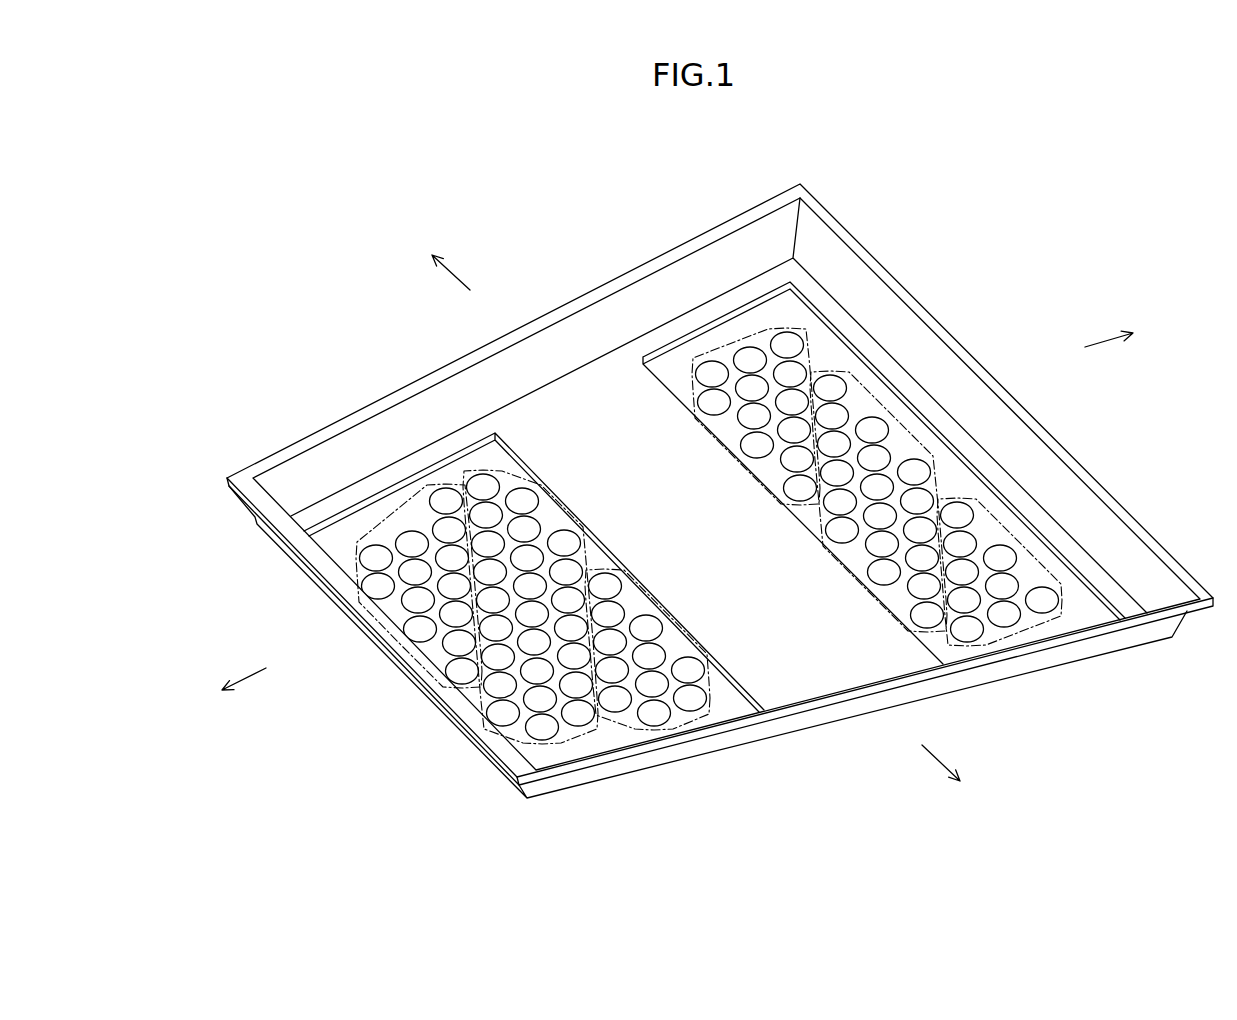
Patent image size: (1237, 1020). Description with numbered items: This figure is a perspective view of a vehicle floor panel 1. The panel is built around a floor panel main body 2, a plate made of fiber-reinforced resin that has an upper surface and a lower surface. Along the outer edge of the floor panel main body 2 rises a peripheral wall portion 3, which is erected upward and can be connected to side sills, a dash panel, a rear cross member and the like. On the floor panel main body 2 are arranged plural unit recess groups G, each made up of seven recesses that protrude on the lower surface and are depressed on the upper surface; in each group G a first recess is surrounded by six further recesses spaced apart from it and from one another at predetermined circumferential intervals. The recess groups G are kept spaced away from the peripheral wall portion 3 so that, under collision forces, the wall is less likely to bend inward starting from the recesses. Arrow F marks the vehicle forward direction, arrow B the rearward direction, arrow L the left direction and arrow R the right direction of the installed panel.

The vehicle floor panel 1 is at (899, 203).
The floor panel main body 2 is at (477, 460).
The peripheral wall portion 3 is at (736, 736).
The unit recess group G is at (447, 500).
The arrow R is at (440, 256).
The arrow F is at (229, 693).
The arrow B is at (1121, 327).
The arrow L is at (948, 783).